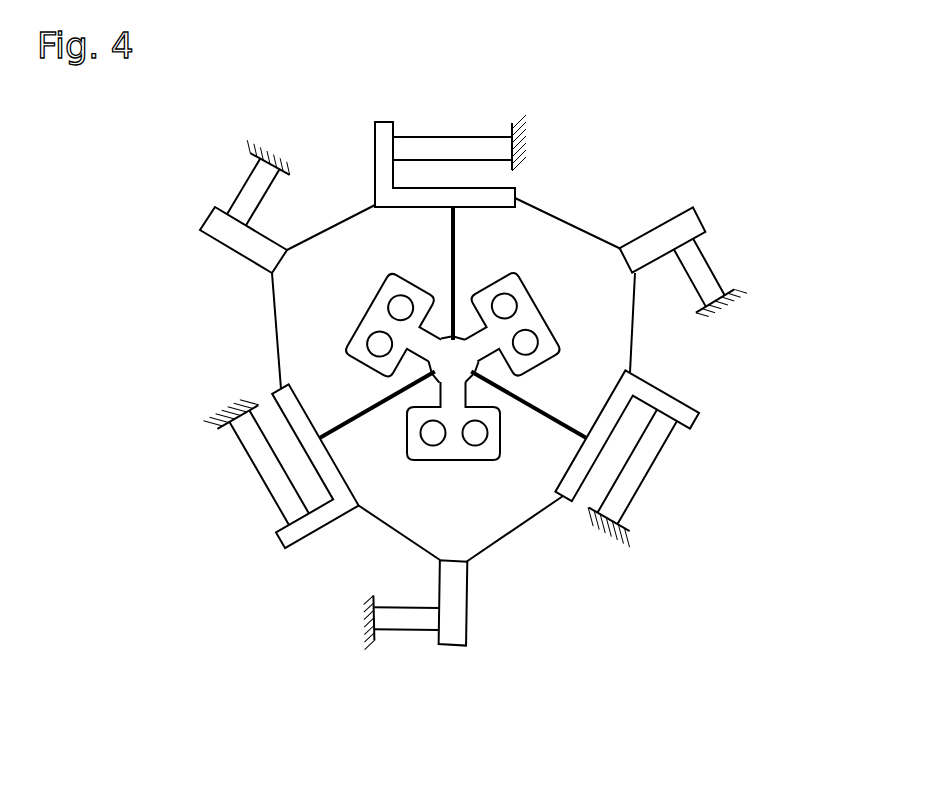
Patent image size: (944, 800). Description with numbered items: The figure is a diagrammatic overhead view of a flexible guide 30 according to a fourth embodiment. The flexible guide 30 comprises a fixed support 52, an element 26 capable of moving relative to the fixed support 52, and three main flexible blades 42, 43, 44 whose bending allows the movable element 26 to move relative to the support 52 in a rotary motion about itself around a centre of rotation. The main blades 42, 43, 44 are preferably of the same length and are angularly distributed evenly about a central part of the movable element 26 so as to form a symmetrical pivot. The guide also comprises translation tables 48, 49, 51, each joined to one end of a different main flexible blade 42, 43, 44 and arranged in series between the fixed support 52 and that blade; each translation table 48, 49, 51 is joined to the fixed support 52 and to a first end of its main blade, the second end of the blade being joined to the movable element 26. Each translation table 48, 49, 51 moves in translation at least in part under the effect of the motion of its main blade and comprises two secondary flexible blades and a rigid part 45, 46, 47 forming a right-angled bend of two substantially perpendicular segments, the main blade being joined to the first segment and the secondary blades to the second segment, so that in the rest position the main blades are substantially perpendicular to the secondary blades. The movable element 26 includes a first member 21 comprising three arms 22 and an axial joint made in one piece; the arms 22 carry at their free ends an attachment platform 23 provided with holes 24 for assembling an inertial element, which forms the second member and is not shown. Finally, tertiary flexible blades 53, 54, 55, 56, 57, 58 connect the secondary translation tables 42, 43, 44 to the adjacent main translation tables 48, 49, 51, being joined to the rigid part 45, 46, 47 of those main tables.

The first member 21 is at (454, 372).
The arms 22 is at (428, 362).
The attachment platform 23 is at (454, 372).
The holes 24 is at (393, 298).
The movable element 26 is at (457, 389).
The flexible guide 30 is at (784, 92).
The main flexible blade 42 is at (362, 206).
The main flexible blade 43 is at (716, 223).
The main flexible blade 44 is at (454, 658).
The rigid part 45 is at (380, 157).
The rigid part 46 is at (290, 534).
The rigid part 47 is at (690, 425).
The translation table 48 is at (663, 452).
The translation table 49 is at (246, 486).
The translation table 51 is at (432, 120).
The fixed support 52 is at (261, 158).
The tertiary flexible blade 53 is at (271, 290).
The tertiary flexible blade 54 is at (243, 210).
The tertiary flexible blade 55 is at (570, 223).
The tertiary flexible blade 56 is at (633, 360).
The tertiary flexible blade 57 is at (500, 541).
The tertiary flexible blade 58 is at (450, 392).